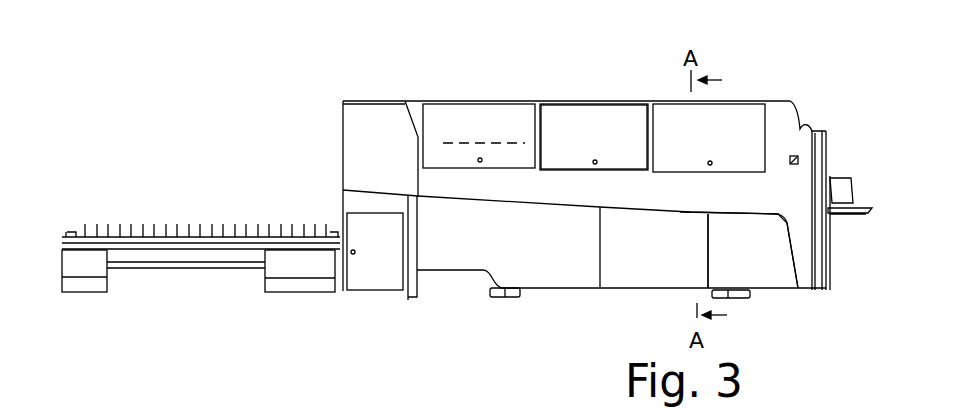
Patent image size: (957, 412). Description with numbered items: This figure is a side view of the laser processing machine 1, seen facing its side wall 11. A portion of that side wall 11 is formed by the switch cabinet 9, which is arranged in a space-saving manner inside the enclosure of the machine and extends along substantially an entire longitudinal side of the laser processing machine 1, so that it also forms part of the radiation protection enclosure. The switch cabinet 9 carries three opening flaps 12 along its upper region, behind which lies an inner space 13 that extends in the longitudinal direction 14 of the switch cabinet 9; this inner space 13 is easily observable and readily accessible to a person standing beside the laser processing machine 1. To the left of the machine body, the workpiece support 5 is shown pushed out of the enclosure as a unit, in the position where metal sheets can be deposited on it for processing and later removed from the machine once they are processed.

The laser processing machine 1 is at (393, 92).
The workpiece support 5 is at (206, 218).
The switch cabinet 9 is at (752, 93).
The side wall 11 is at (721, 207).
The opening flaps 12 is at (668, 130).
The inner space 13 is at (606, 152).
The longitudinal direction 14 is at (476, 140).